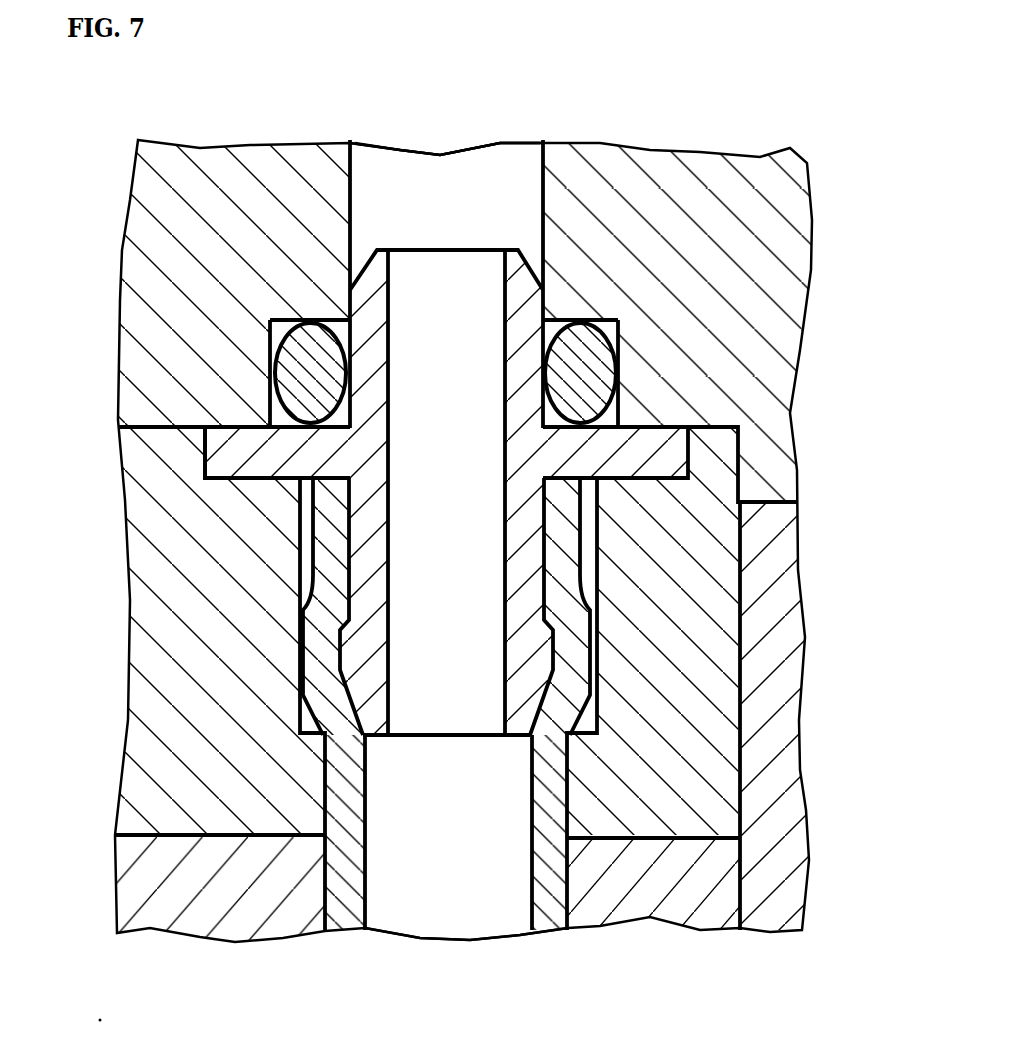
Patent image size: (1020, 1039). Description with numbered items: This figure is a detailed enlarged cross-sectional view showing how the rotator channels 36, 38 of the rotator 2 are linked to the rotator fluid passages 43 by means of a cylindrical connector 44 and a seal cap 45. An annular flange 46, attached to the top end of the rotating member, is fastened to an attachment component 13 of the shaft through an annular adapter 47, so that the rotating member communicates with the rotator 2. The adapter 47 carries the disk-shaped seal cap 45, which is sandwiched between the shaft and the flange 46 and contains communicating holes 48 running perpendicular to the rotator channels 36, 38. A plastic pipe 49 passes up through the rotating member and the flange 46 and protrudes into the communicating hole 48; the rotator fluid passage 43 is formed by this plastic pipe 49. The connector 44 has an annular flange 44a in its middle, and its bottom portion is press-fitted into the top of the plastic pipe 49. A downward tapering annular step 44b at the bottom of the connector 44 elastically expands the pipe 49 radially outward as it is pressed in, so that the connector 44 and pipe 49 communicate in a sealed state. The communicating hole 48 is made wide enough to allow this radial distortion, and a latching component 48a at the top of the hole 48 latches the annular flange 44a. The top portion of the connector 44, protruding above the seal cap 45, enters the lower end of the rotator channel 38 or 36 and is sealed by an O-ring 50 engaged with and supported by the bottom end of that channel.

The rotator 2 is at (797, 384).
The attachment component 13 is at (736, 247).
The rotator channel 36 is at (447, 149).
The rotator channel 38 is at (489, 190).
The rotator fluid passage 43 is at (510, 878).
The connector 44 is at (532, 316).
The annular flange 44a is at (205, 445).
The annular step 44b is at (345, 662).
The seal cap 45 is at (640, 840).
The annular flange 46 is at (150, 875).
The annular adapter 47 is at (778, 683).
The communicating hole 48 is at (598, 512).
The latching component 48a is at (692, 468).
The plastic pipe 49 is at (345, 902).
The O-ring 50 is at (285, 377).